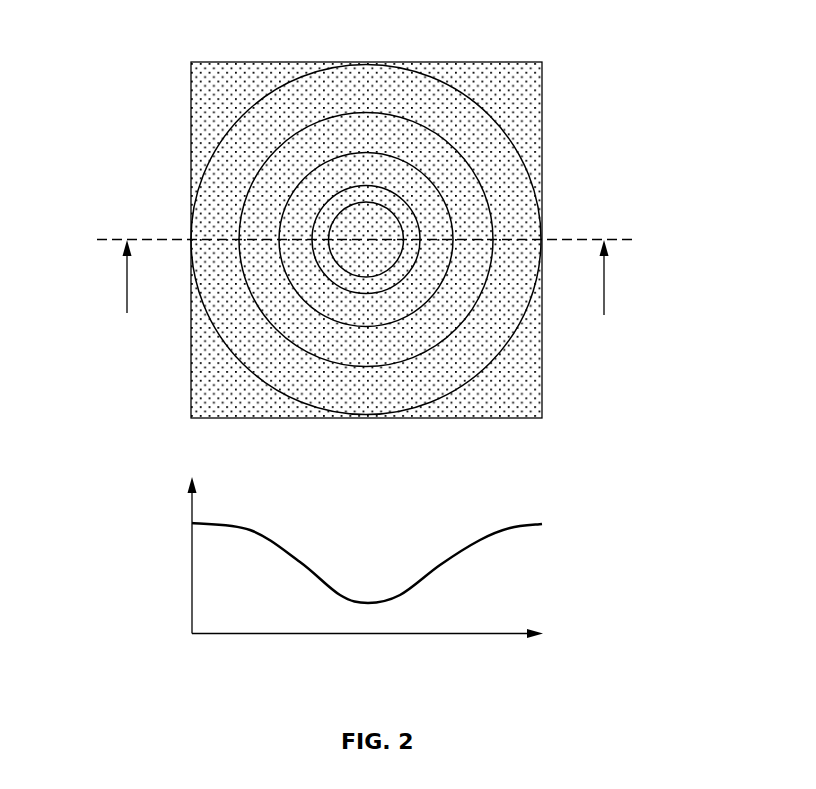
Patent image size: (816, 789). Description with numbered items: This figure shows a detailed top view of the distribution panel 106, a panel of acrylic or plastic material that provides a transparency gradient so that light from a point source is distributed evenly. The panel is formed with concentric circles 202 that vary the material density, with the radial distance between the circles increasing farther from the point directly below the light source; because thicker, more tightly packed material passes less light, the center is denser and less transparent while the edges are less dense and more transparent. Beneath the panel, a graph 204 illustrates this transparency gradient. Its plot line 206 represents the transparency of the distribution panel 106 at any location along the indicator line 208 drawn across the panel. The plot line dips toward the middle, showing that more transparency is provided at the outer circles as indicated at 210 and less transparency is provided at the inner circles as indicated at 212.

The distribution panel 106 is at (458, 217).
The concentric circles 202 is at (300, 218).
The graph 204 is at (381, 555).
The plot line 206 is at (392, 563).
The indicator line 208 is at (333, 259).
The outer circles transparency indication 210 is at (270, 496).
The inner circles transparency indication 212 is at (420, 537).